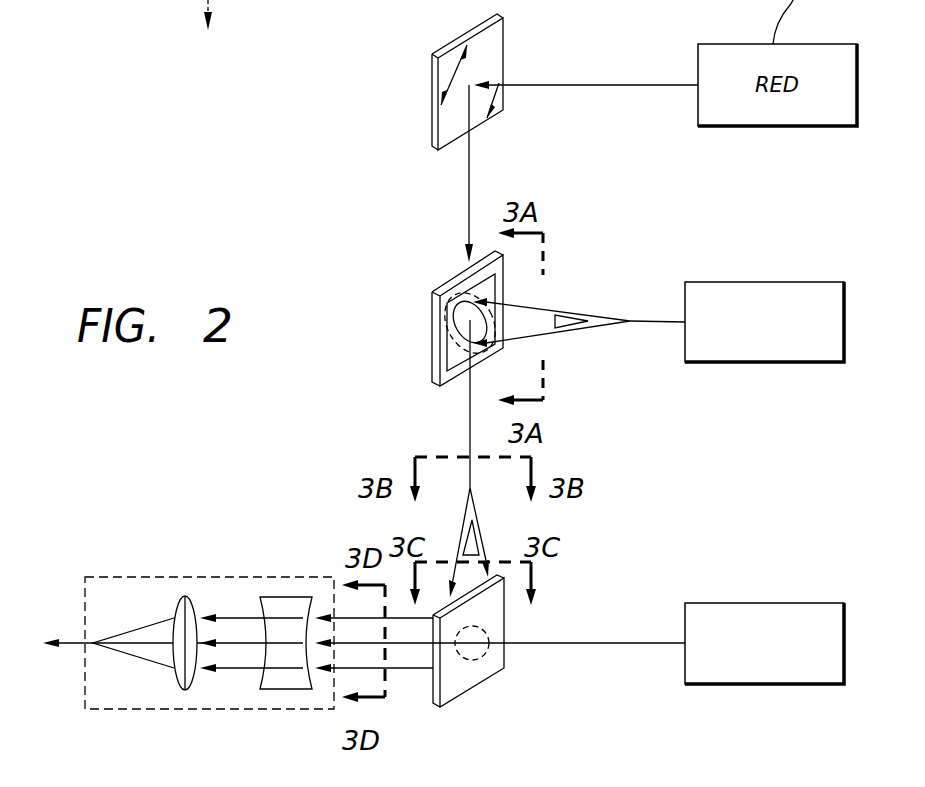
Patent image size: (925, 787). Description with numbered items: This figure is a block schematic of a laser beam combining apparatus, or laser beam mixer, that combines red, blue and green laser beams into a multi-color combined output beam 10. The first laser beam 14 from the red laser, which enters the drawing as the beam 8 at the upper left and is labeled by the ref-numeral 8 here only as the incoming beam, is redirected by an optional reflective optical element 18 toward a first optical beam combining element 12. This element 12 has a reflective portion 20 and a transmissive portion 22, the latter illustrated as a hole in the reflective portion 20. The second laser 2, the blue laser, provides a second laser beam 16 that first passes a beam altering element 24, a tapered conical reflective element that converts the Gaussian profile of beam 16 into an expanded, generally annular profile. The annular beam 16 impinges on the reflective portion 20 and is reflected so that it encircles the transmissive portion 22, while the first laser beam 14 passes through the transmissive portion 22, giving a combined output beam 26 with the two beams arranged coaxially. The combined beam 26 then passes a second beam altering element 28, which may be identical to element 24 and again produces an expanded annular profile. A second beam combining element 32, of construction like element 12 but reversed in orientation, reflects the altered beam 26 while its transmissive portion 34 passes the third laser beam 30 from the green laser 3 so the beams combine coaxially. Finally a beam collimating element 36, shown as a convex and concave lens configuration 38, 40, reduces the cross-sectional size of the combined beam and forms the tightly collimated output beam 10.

The input beam 8 is at (240, 0).
The reflective optical element 18 is at (503, 54).
The first laser beam 14 is at (468, 165).
The first optical beam combining element 12 is at (432, 315).
The reflective portion 20 is at (456, 360).
The transmissive portion 22 is at (466, 310).
The combined output beam 26 is at (470, 405).
The beam altering element 24 is at (566, 316).
The second laser beam 16 is at (645, 323).
The second laser 2 is at (774, 282).
The second beam altering element 28 is at (476, 540).
The second beam combining element 32 is at (474, 688).
The transmissive portion 34 is at (466, 650).
The third laser beam 30 is at (652, 643).
The third laser 3 is at (760, 603).
The beam collimating element 36 is at (140, 577).
The convex lens 38 is at (295, 597).
The concave lens 40 is at (182, 683).
The combined output beam 10 is at (73, 643).